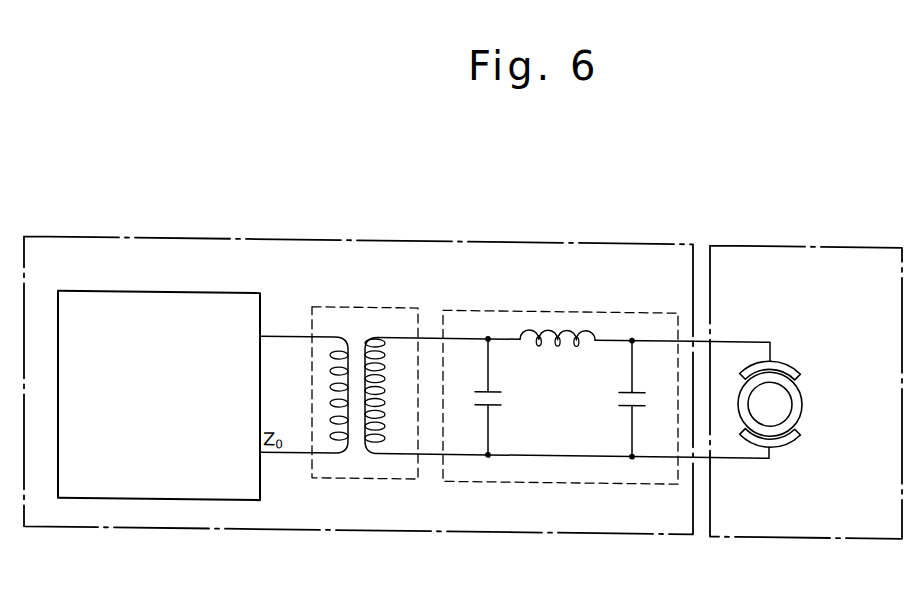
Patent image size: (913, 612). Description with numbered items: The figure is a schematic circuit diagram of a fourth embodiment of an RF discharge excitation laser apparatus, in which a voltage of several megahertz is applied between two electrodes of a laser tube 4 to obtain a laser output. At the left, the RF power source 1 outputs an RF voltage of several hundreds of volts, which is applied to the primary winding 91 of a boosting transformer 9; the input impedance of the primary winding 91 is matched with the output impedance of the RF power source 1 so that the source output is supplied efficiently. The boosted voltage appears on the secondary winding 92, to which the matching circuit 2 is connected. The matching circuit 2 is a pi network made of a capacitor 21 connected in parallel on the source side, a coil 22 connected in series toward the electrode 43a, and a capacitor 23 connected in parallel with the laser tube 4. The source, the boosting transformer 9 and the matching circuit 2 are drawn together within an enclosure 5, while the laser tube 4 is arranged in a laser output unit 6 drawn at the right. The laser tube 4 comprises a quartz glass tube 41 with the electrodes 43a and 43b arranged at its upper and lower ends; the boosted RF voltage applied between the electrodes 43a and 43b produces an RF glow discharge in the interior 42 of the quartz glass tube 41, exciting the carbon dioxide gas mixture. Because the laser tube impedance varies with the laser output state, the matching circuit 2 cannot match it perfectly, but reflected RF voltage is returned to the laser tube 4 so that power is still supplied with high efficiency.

The RF power source 1 is at (202, 289).
The impedance matching unit 5 is at (414, 235).
The laser output unit 6 is at (818, 234).
The boosting transformer 9 is at (373, 300).
The primary winding 91 is at (327, 362).
The secondary winding 92 is at (392, 372).
The matching circuit 2 is at (567, 298).
The capacitor 21 is at (493, 400).
The coil 22 is at (563, 340).
The capacitor 23 is at (625, 399).
The laser tube 4 is at (771, 403).
The quartz glass tube 41 is at (802, 395).
The interior 42 is at (776, 400).
The electrode 43a is at (781, 355).
The electrode 43b is at (787, 428).